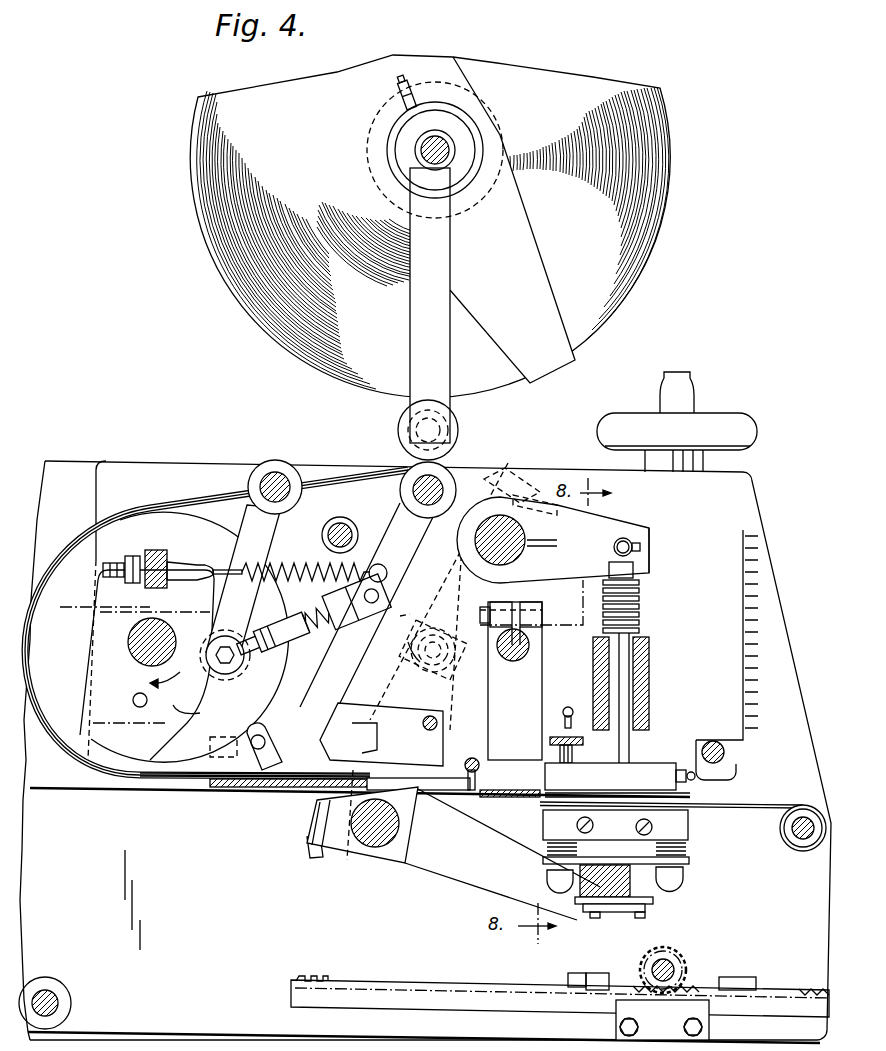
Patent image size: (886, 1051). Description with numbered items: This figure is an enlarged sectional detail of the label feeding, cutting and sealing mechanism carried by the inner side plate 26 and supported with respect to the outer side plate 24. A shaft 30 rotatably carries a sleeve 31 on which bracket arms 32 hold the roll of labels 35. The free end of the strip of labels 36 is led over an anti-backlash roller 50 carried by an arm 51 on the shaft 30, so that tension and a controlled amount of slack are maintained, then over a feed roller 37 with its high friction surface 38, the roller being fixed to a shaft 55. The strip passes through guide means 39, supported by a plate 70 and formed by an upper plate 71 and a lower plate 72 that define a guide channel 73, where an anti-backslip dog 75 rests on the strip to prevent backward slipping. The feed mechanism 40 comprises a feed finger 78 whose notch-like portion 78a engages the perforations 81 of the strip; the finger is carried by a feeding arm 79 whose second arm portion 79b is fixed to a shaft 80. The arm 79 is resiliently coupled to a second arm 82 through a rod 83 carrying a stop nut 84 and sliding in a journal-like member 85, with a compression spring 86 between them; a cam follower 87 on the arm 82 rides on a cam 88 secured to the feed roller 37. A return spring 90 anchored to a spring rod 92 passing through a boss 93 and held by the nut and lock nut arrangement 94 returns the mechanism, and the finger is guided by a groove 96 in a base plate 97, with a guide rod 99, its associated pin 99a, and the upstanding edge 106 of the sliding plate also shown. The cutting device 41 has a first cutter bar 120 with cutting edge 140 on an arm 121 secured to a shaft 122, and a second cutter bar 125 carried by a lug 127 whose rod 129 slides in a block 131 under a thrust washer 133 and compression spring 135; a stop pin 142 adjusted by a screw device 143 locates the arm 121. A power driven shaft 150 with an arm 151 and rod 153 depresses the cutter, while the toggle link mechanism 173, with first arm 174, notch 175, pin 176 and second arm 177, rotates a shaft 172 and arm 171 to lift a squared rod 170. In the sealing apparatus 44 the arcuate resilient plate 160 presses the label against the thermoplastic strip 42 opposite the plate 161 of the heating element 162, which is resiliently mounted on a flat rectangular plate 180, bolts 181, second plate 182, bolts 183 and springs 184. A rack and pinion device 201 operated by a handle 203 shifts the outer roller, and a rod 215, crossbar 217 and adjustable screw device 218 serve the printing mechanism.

The side plate 24 is at (100, 939).
The side plate 26 is at (728, 694).
The shaft 30 is at (447, 157).
The sleeve 31 is at (433, 132).
The bracket arms 32 is at (533, 243).
The roll of labels 35 is at (655, 200).
The free end of the strip of labels 36 is at (347, 464).
The feed roller 37 is at (70, 552).
The high friction surface 38 is at (207, 518).
The guide means 39 is at (195, 788).
The feed mechanism 40 is at (405, 585).
The cutting device 41 is at (555, 690).
The strip of thermoplastic material 42 is at (781, 800).
The sealing apparatus 44 is at (703, 823).
The anti-backlash roller 50 is at (453, 433).
The arm 51 is at (425, 299).
The shaft 55 is at (152, 635).
The plate 70 is at (223, 790).
The upper plate 71 is at (225, 750).
The lower plate 72 is at (255, 788).
The guide channel 73 is at (273, 787).
The anti-backslip dog 75 is at (270, 753).
The feed finger 78 is at (355, 723).
The notch-like portion 78a is at (387, 755).
The feeding arm 79 is at (327, 673).
The second arm portion 79b is at (380, 524).
The shaft 80 is at (414, 490).
The perforations 81 is at (225, 655).
The arm 82 is at (280, 516).
The rod 83 is at (280, 614).
The stop nut 84 is at (313, 608).
The journal-like member 85 is at (357, 603).
The compression spring 86 is at (279, 652).
The cam follower 87 is at (232, 672).
The cam 88 is at (203, 712).
The spring 90 is at (298, 562).
The spring rod 92 is at (177, 572).
The boss 93 is at (160, 552).
The nut and lock nut arrangement 94 is at (135, 554).
The groove 96 is at (427, 790).
The base plate 97 is at (510, 800).
The guide rod 99 is at (472, 758).
The pin shank 99a is at (480, 768).
The vertically upstanding edge 106 is at (412, 708).
The first cutter bar 120 is at (510, 802).
The arm 121 is at (550, 694).
The shaft 122 is at (525, 640).
The second cutter bar 125 is at (686, 797).
The rectangular lug 127 is at (636, 772).
The rod 129 is at (621, 660).
The block 131 is at (646, 647).
The thrust washer 133 is at (638, 575).
The compression spring 135 is at (641, 597).
The cutting edge 140 is at (540, 802).
The stop pin 142 is at (627, 774).
The screw device 143 is at (693, 768).
The power driven shaft 150 is at (468, 478).
The arm 151 is at (609, 527).
The rod 153 is at (640, 547).
The arcuate resilient plate 160 is at (713, 806).
The plate 161 is at (615, 825).
The heating element 162 is at (626, 825).
The squared rod 170 is at (614, 905).
The arm 171 is at (432, 852).
The shaft 172 is at (367, 848).
The toggle link mechanism 173 is at (305, 818).
The first arm 174 is at (513, 654).
The notch 175 is at (410, 620).
The pin 176 is at (437, 632).
The second arm 177 is at (492, 592).
The flat rectangular plate 180 is at (689, 863).
The bolts 181 is at (590, 905).
The second plate 182 is at (644, 989).
The bolts 183 is at (686, 877).
The springs 184 is at (656, 848).
The rack and pinion device 201 is at (695, 976).
The handle 203 is at (738, 425).
The rod 215 is at (724, 752).
The crossbar 217 is at (548, 740).
The adjustable screw device 218 is at (569, 707).